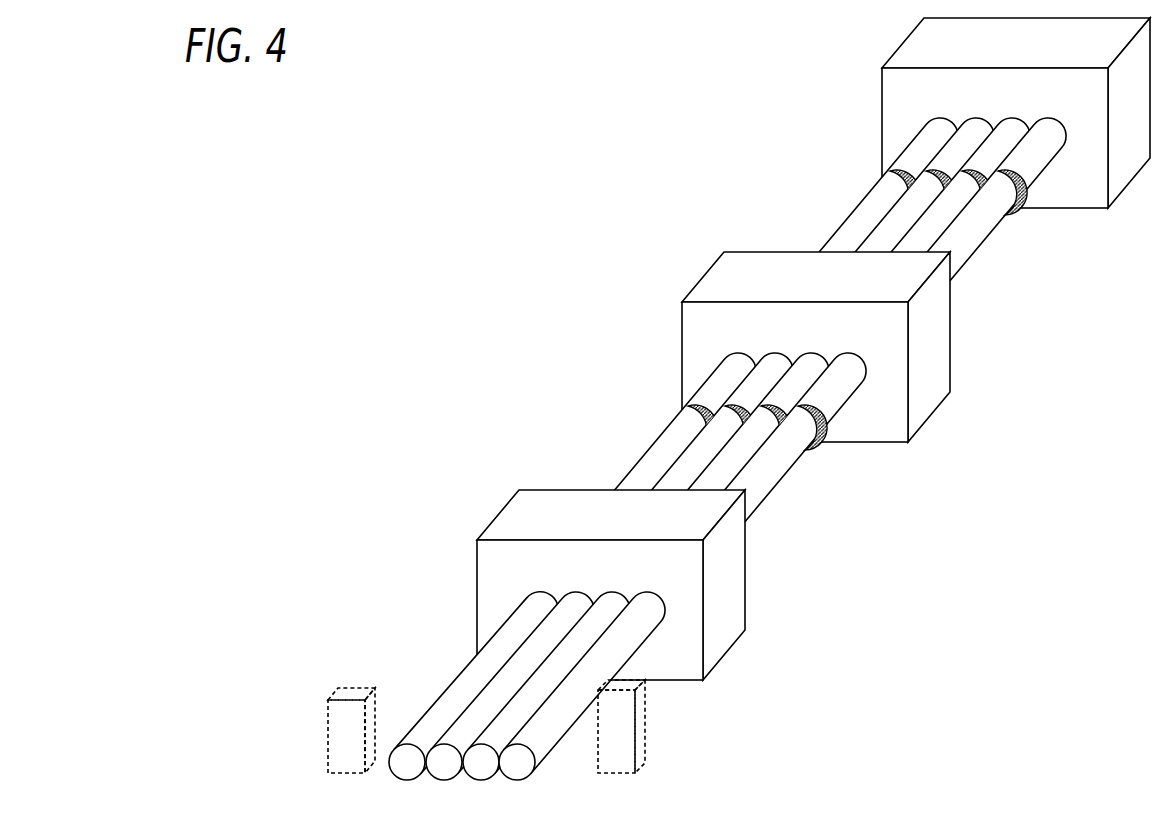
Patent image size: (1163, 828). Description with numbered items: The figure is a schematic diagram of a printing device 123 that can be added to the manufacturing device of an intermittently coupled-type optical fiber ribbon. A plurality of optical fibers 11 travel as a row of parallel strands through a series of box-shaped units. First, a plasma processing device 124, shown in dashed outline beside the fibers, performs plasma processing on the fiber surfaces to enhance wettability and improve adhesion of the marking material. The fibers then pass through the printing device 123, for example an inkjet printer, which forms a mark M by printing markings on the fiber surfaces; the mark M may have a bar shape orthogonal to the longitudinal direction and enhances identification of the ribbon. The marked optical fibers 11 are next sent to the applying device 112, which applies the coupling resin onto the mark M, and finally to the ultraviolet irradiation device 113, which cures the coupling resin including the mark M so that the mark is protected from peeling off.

The optical fibers 11 is at (521, 779).
The applying device 112 is at (682, 340).
The ultraviolet irradiation device 113 is at (882, 110).
The printing device 123 is at (477, 597).
The plasma processing device 124 is at (328, 720).
The mark M is at (1018, 202).